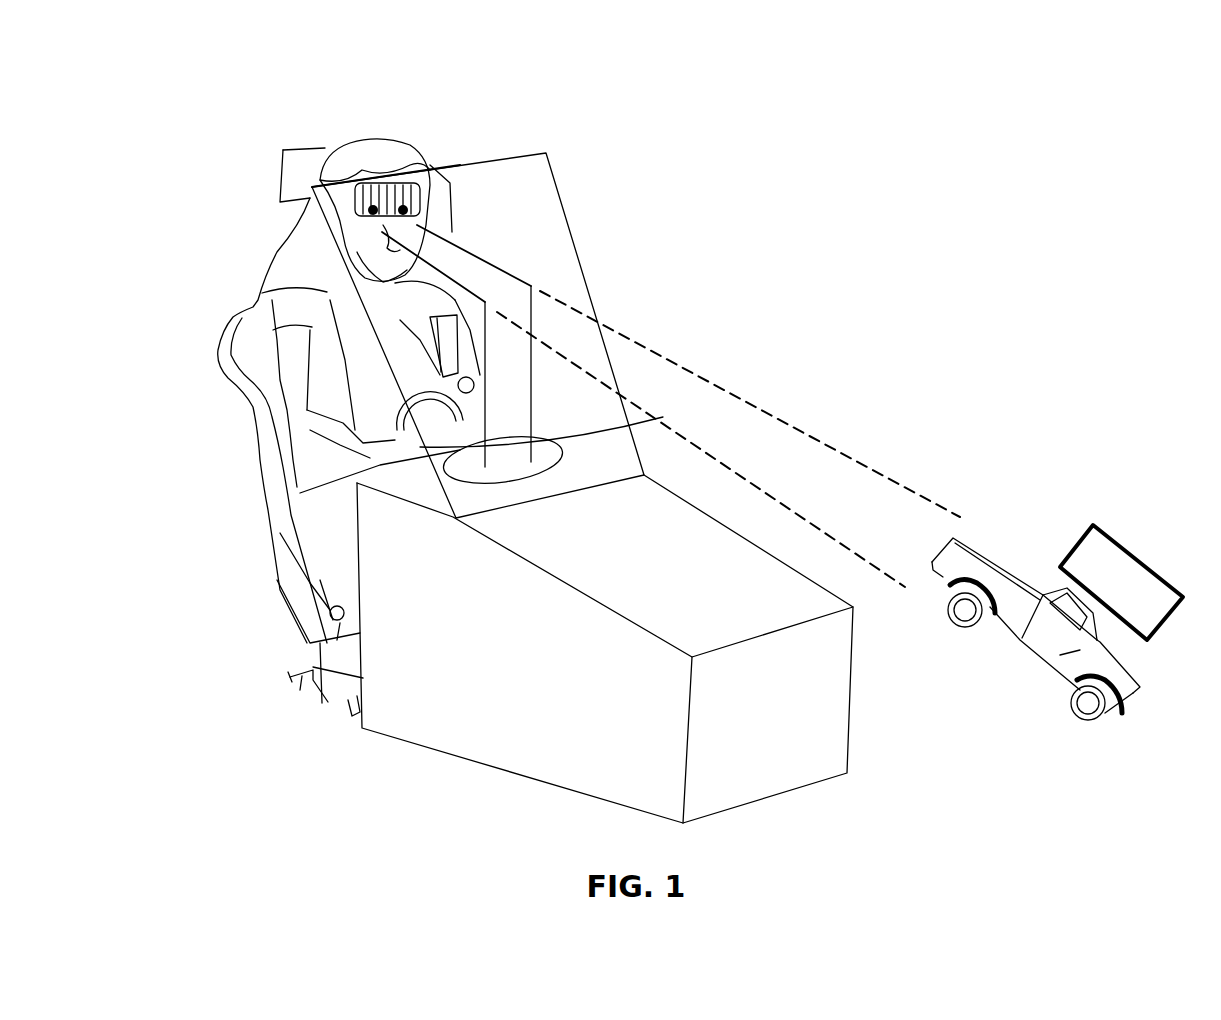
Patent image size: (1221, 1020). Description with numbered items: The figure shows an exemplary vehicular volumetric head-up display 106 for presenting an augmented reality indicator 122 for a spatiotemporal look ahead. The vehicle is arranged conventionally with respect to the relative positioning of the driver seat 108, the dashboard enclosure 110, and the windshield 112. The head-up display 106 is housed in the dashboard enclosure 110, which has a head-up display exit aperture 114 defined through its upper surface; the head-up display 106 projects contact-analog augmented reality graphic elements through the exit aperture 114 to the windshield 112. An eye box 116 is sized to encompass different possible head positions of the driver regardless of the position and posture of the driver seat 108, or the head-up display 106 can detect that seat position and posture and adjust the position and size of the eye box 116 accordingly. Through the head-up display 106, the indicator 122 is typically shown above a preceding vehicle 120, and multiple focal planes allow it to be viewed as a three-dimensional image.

The head-up display 106 is at (695, 160).
The driver seat 108 is at (233, 317).
The dashboard enclosure 110 is at (360, 517).
The windshield 112 is at (580, 265).
The head-up display exit aperture 114 is at (657, 418).
The eye box 116 is at (405, 150).
The preceding vehicle 120 is at (963, 540).
The augmented reality indicator 122 is at (1097, 520).